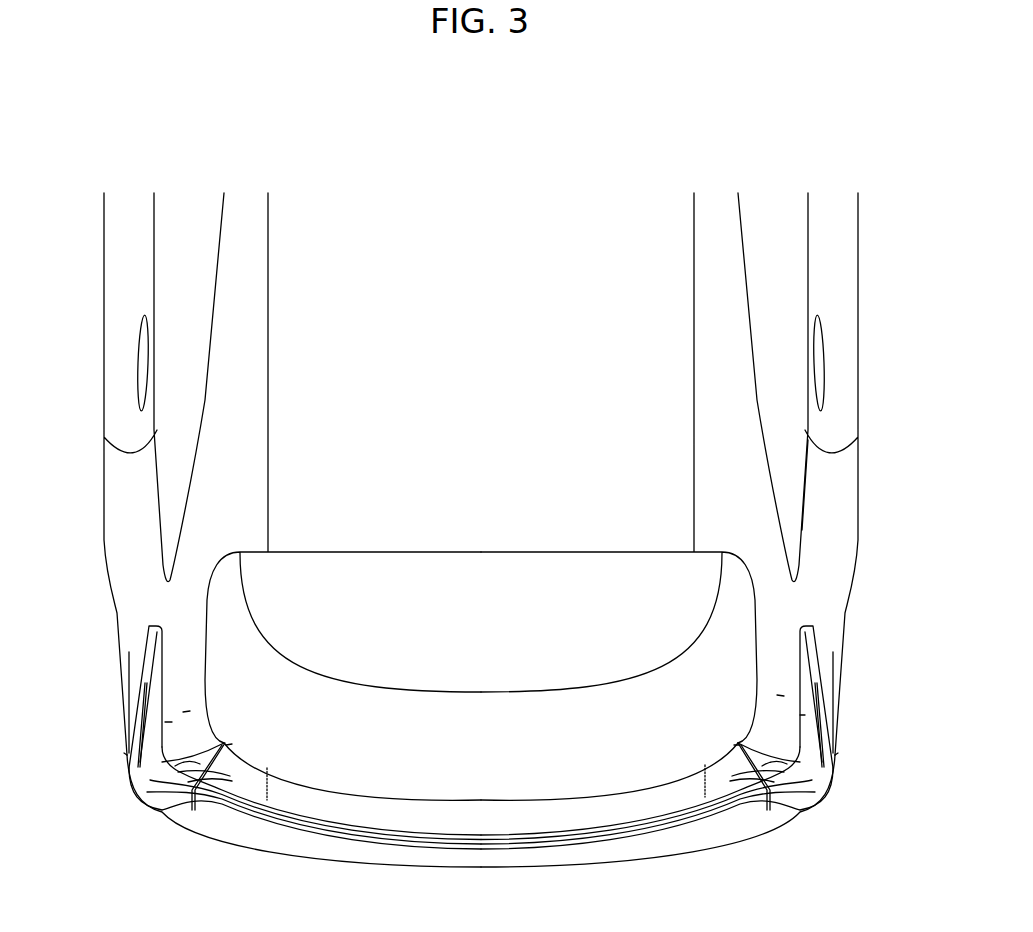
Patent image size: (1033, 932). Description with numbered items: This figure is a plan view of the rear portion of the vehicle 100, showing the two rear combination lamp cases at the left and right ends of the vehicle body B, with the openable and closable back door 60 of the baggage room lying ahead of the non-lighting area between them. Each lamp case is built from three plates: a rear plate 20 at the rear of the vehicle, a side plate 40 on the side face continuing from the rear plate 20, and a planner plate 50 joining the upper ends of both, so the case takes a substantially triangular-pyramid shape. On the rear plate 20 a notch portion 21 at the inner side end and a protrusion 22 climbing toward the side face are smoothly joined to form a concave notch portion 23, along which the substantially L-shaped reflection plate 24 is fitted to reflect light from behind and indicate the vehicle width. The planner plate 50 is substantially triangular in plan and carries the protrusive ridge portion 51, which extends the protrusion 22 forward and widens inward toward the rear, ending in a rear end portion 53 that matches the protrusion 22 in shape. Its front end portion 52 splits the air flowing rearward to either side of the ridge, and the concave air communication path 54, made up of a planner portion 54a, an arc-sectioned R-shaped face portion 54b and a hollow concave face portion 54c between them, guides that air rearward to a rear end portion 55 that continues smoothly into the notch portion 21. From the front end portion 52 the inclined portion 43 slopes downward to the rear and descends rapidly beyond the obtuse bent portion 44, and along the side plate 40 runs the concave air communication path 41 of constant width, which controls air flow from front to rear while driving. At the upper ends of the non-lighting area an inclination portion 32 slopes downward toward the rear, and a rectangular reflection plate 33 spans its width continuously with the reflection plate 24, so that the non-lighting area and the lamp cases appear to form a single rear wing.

The vehicle 100 is at (160, 156).
The vehicle body B is at (827, 552).
The rear plate 20 is at (163, 815).
The notch portion 21 is at (217, 783).
The protrusion 22 is at (210, 773).
The concave notch portion 23 is at (486, 782).
The reflection plate 24 is at (174, 788).
The inclination portion 32 is at (272, 810).
The reflection plate 33 is at (748, 802).
The side plate 40 is at (76, 723).
The air communication path 41 is at (138, 767).
The inclined portion 43 is at (138, 705).
The bent portion 44 is at (128, 735).
The planner plate 50 is at (194, 655).
The protrusive ridge portion 51 is at (150, 665).
The front end portion 52 is at (150, 627).
The rear end portion 53 is at (166, 739).
The concave air communication path 54 is at (330, 690).
The planner portion 54a is at (183, 712).
The R-shaped face portion 54b is at (165, 722).
The concave face portion 54c is at (226, 745).
The rear end portion 55 is at (200, 767).
The back door 60 is at (476, 828).